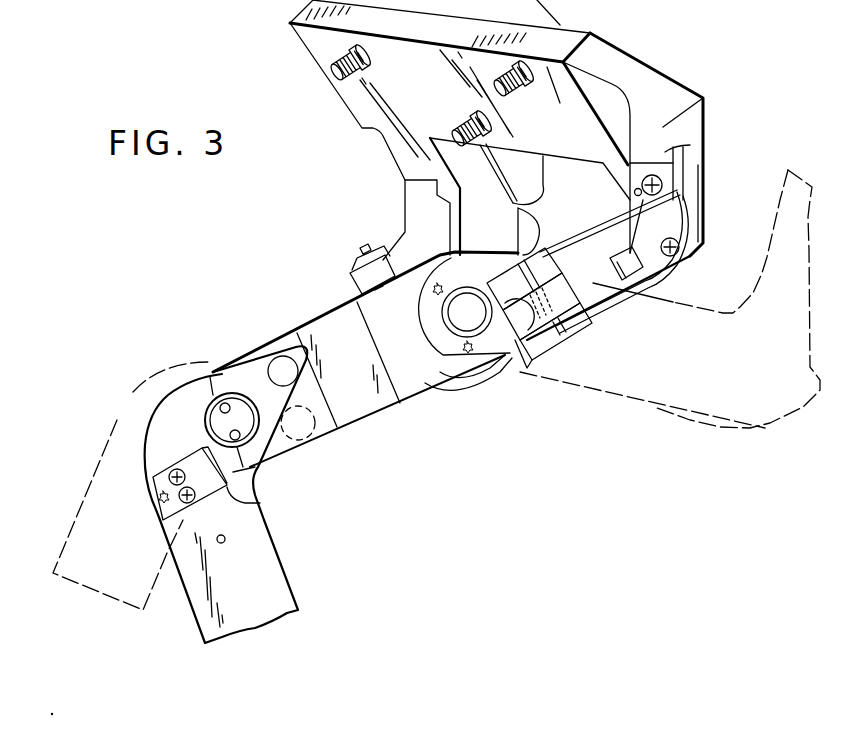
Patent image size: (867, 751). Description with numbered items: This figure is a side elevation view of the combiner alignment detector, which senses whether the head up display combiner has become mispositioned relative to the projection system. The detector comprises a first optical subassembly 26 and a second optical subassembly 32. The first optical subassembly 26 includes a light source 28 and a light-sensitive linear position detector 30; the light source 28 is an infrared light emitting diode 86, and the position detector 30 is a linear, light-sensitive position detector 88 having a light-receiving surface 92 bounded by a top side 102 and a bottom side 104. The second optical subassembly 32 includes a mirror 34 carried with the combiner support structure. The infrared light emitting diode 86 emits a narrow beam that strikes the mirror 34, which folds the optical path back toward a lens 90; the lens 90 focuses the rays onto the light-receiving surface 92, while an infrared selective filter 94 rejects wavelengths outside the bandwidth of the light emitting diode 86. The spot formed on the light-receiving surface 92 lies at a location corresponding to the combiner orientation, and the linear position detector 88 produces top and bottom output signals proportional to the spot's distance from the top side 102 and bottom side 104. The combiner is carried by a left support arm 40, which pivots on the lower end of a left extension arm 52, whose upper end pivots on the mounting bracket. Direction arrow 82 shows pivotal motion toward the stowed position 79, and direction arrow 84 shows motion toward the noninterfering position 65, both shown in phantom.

The first optical subassembly 26 is at (515, 396).
The light source 28 is at (590, 288).
The light-sensitive linear position detector 30 is at (551, 354).
The second optical subassembly 32 is at (191, 447).
The mirror 34 is at (258, 503).
The left support arm 40 is at (290, 597).
The left extension arm 52 is at (338, 379).
The noninterfering position 65 is at (82, 495).
The stowed position 79 is at (693, 425).
The direction arrow 82 is at (290, 572).
The direction arrow 84 is at (160, 567).
The infrared light emitting diode 86 is at (625, 263).
The linear light-sensitive position detector 88 is at (597, 327).
The lens 90 is at (455, 326).
The light-receiving surface 92 is at (506, 260).
The infrared selective filter 94 is at (485, 307).
The top side 102 is at (517, 260).
The bottom side 104 is at (555, 362).